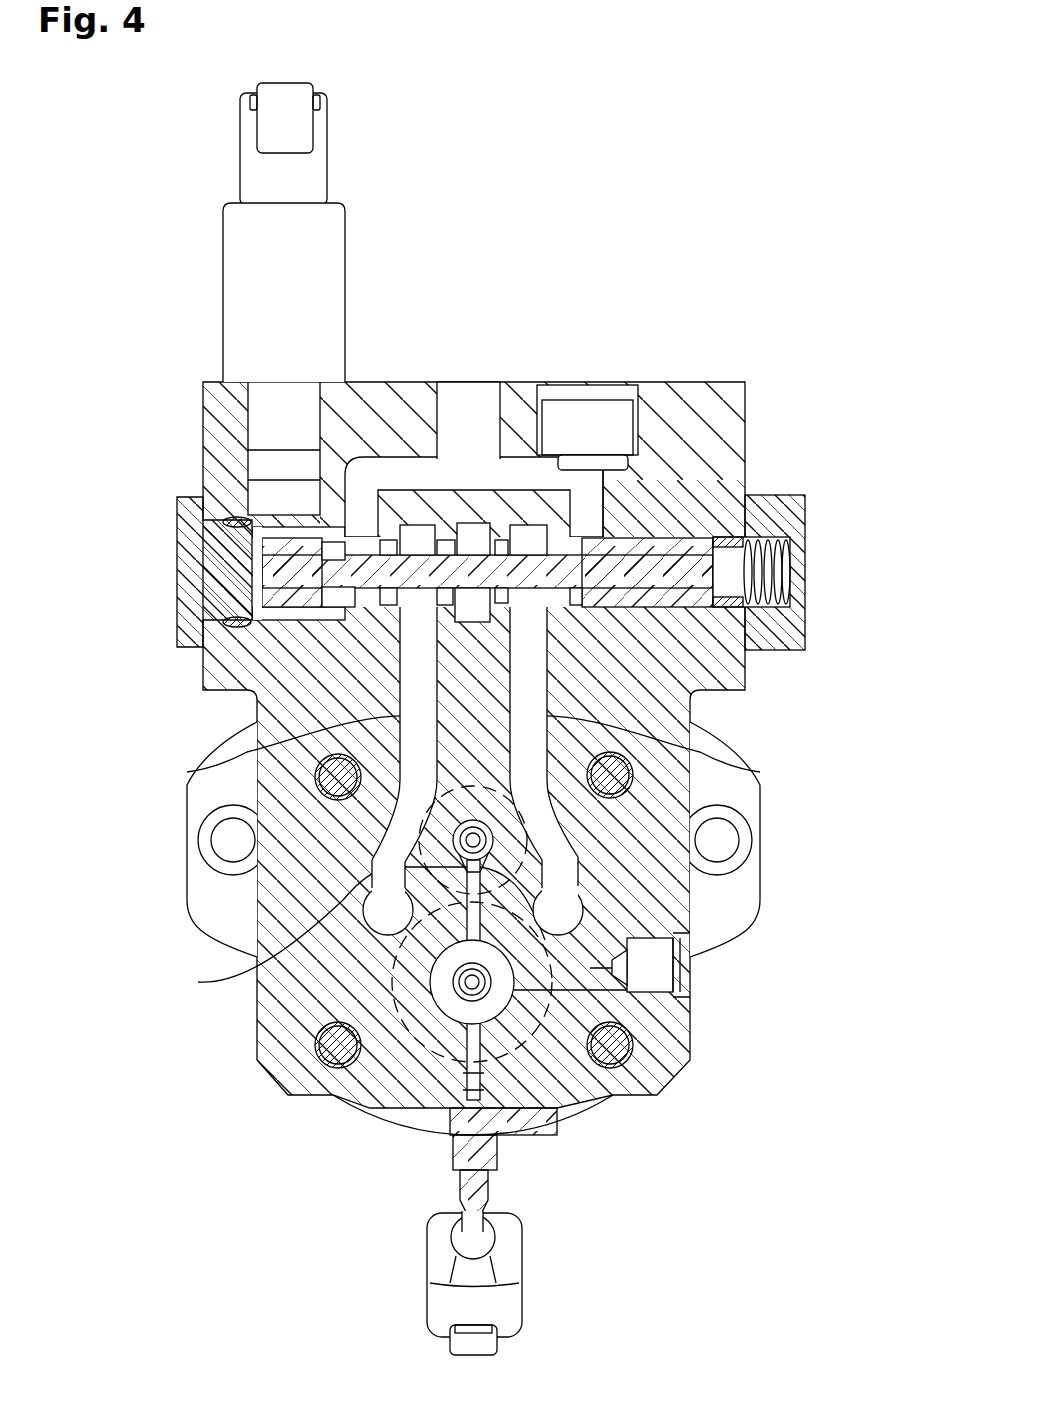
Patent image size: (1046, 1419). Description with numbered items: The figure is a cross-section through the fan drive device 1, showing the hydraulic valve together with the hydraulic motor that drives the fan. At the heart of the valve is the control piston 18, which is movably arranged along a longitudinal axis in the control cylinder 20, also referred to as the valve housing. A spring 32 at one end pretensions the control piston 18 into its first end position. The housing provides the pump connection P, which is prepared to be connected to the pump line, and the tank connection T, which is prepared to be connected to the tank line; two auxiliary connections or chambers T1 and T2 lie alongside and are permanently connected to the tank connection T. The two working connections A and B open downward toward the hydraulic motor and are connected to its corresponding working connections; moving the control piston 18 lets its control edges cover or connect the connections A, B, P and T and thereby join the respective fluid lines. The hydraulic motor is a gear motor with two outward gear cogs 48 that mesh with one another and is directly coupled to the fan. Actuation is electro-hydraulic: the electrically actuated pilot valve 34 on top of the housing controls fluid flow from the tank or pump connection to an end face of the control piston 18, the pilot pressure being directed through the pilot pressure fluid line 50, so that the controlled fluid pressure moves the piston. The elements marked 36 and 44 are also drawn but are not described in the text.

The fan drive device 1 is at (483, 719).
The control piston 18 is at (718, 562).
The control cylinder 20 is at (473, 696).
The spring 32 is at (760, 575).
The pilot valve 34 is at (383, 178).
The valve block bottom part 36 is at (708, 1087).
The connector 44 is at (495, 1298).
The gear cogs 48 is at (450, 995).
The pilot pressure fluid line 50 is at (270, 443).
The pump connection P is at (472, 425).
The tank connection T is at (592, 430).
The auxiliary connection T1 is at (270, 493).
The auxiliary connection T2 is at (640, 505).
The first working connection A is at (187, 773).
The second working connection B is at (760, 773).